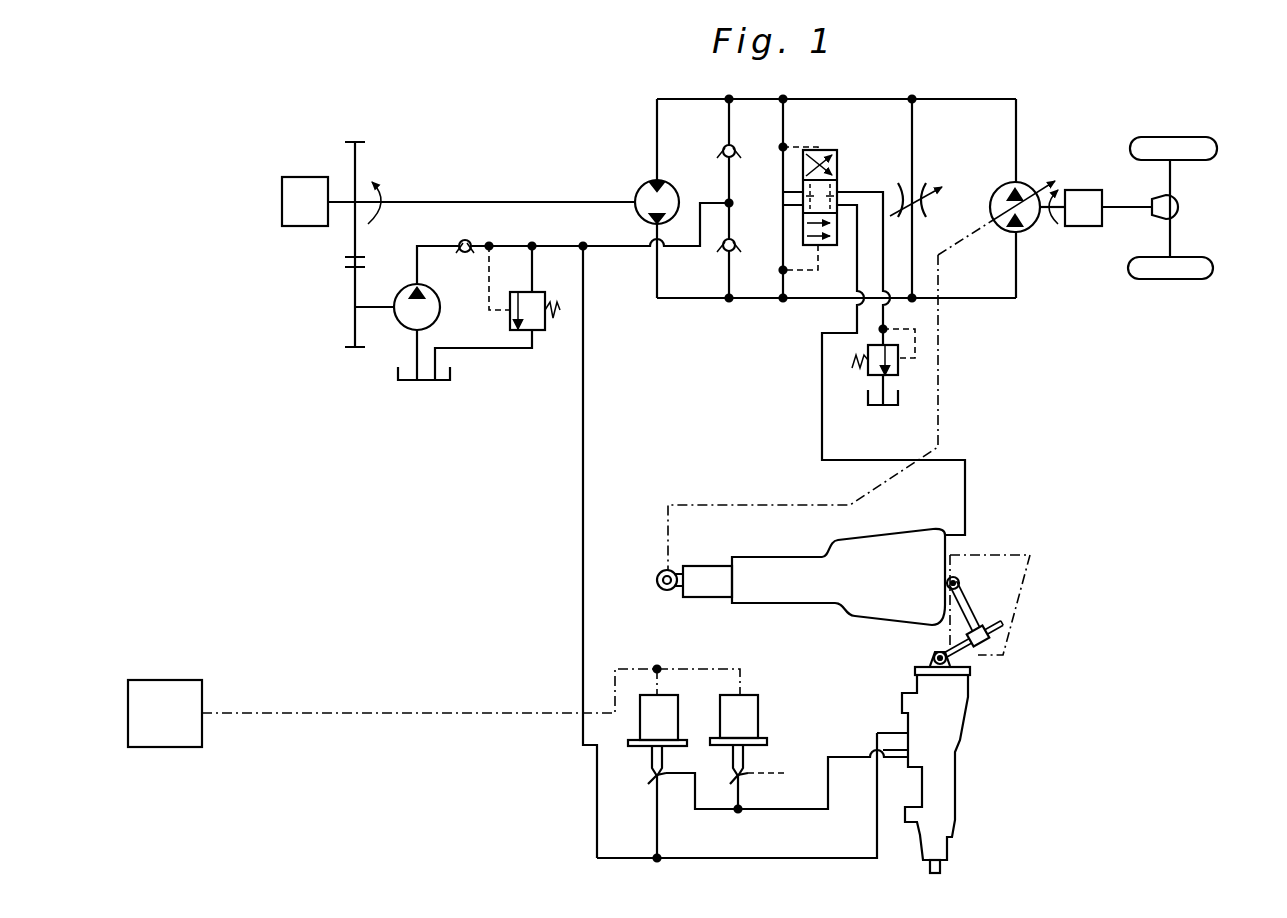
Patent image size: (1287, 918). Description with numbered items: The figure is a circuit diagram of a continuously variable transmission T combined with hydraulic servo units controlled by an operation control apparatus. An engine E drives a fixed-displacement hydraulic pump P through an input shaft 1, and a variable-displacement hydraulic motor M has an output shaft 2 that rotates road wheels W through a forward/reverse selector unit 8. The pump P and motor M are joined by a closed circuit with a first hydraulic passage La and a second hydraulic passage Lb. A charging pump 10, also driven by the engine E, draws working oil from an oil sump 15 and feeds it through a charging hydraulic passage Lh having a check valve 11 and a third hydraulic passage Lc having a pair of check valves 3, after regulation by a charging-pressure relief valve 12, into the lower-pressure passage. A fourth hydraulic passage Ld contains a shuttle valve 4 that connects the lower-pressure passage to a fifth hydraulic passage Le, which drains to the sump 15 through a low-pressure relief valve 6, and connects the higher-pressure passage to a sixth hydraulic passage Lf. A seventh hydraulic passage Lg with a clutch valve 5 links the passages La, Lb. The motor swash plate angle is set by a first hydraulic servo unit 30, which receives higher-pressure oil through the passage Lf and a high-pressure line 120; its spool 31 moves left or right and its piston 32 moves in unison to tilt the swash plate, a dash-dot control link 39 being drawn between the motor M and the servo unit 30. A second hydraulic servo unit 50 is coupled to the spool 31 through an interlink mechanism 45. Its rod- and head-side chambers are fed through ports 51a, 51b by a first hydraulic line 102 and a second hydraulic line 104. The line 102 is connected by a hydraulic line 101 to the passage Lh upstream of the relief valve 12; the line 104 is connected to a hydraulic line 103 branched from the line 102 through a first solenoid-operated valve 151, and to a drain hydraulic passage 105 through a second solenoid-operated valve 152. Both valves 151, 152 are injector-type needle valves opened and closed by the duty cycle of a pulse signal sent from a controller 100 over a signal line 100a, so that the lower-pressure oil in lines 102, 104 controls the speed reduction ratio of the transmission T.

The input shaft 1 is at (546, 200).
The output shaft 2 is at (1119, 207).
The check valves 3 is at (722, 146).
The shuttle valve 4 is at (838, 150).
The clutch valve 5 is at (931, 206).
The low-pressure relief valve 6 is at (902, 366).
The forward/reverse selector unit 8 is at (1085, 227).
The charging pump 10 is at (442, 316).
The check valve 11 is at (403, 280).
The charging-pressure relief valve 12 is at (545, 300).
The oil sump 15 is at (455, 376).
The first hydraulic servo unit 30 is at (808, 614).
The spool 31 is at (957, 577).
The piston 32 is at (705, 577).
The control link line 39 is at (940, 385).
The interlink mechanism 45 is at (988, 611).
The second hydraulic servo unit 50 is at (905, 676).
The port 51a is at (900, 720).
The port 51b is at (906, 758).
The controller 100 is at (181, 679).
The signal line 100a is at (368, 711).
The hydraulic line 101 is at (588, 362).
The first hydraulic line 102 is at (808, 860).
The hydraulic line 103 is at (657, 842).
The second hydraulic line 104 is at (793, 812).
The drain hydraulic passage 105 is at (754, 772).
The high-pressure line 120 is at (957, 459).
The first solenoid-operated valve 151 is at (680, 708).
The second solenoid-operated valve 152 is at (759, 711).
The engine E is at (281, 200).
The hydraulic pump P is at (636, 184).
The hydraulic motor M is at (1032, 186).
The continuously variable transmission T is at (990, 90).
The road wheels W is at (1194, 132).
The first hydraulic passage La is at (693, 296).
The second hydraulic passage Lb is at (697, 98).
The third hydraulic passage Lc is at (734, 187).
The fourth hydraulic passage Ld is at (786, 110).
The fifth hydraulic passage Le is at (866, 190).
The sixth hydraulic passage Lf is at (855, 250).
The seventh hydraulic passage Lg is at (916, 128).
The charging hydraulic passage Lh is at (622, 249).